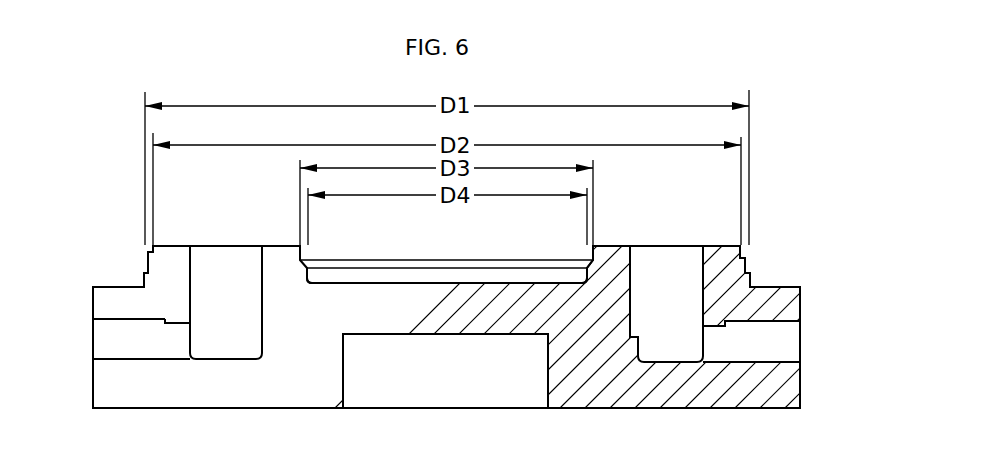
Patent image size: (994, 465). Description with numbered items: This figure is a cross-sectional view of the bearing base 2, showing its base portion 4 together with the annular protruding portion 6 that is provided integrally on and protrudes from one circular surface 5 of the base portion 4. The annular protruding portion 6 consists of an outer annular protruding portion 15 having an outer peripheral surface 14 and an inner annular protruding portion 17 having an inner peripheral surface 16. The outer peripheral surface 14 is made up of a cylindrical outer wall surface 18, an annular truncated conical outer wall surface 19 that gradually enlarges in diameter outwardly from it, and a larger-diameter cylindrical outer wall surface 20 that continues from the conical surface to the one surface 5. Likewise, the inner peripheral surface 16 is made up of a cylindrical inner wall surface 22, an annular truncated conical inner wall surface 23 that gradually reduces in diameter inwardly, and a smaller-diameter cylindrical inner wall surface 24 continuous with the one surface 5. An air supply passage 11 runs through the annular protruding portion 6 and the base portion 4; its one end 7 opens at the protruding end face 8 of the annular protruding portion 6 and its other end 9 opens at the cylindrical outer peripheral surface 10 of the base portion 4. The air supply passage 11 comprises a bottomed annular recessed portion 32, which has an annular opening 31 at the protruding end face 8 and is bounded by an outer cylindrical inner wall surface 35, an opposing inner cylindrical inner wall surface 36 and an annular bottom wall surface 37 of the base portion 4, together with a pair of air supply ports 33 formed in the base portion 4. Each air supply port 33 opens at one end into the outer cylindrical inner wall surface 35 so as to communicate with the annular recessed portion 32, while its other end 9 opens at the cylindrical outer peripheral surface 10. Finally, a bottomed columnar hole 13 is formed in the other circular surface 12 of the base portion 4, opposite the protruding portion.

The bearing base 2 is at (145, 409).
The base portion 4 is at (294, 395).
The one circular surface 5 is at (796, 287).
The annular protruding portion 6 is at (615, 242).
The one end 7 is at (237, 245).
The protruding end face 8 is at (718, 247).
The another end 9 is at (92, 353).
The cylindrical outer peripheral surface 10 is at (801, 312).
The air supply passage 11 is at (652, 371).
The another circular surface 12 is at (688, 409).
The bottomed columnar hole 13 is at (455, 395).
The outer peripheral surface 14 is at (748, 257).
The outer annular protruding portion 15 is at (178, 258).
The inner peripheral surface 16 is at (572, 250).
The inner annular protruding portion 17 is at (620, 250).
The cylindrical outer wall surface 18 is at (150, 250).
The annular truncated conical outer wall surface 19 is at (148, 262).
The cylindrical outer wall surface 20 is at (144, 277).
The cylindrical inner wall surface 22 is at (362, 257).
The annular truncated conical inner wall surface 23 is at (422, 266).
The cylindrical inner wall surface 24 is at (478, 278).
The annular opening 31 is at (688, 246).
The bottomed annular recessed portion 32 is at (210, 281).
The air supply ports 33 is at (113, 352).
The outer cylindrical inner wall surface 35 is at (702, 302).
The inner cylindrical inner wall surface 36 is at (638, 338).
The annular bottom wall surface 37 is at (250, 343).